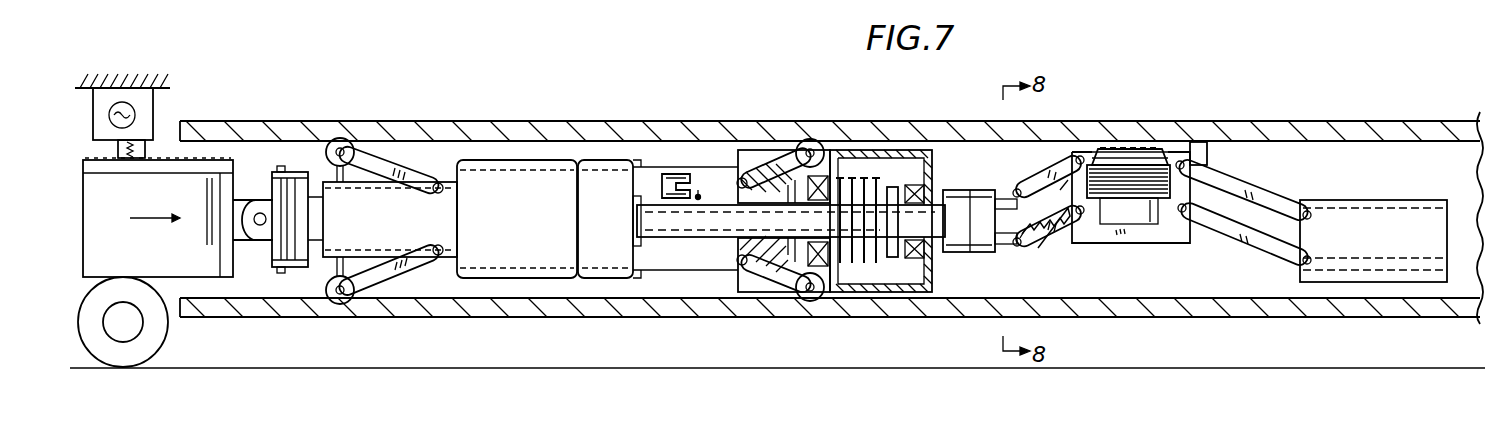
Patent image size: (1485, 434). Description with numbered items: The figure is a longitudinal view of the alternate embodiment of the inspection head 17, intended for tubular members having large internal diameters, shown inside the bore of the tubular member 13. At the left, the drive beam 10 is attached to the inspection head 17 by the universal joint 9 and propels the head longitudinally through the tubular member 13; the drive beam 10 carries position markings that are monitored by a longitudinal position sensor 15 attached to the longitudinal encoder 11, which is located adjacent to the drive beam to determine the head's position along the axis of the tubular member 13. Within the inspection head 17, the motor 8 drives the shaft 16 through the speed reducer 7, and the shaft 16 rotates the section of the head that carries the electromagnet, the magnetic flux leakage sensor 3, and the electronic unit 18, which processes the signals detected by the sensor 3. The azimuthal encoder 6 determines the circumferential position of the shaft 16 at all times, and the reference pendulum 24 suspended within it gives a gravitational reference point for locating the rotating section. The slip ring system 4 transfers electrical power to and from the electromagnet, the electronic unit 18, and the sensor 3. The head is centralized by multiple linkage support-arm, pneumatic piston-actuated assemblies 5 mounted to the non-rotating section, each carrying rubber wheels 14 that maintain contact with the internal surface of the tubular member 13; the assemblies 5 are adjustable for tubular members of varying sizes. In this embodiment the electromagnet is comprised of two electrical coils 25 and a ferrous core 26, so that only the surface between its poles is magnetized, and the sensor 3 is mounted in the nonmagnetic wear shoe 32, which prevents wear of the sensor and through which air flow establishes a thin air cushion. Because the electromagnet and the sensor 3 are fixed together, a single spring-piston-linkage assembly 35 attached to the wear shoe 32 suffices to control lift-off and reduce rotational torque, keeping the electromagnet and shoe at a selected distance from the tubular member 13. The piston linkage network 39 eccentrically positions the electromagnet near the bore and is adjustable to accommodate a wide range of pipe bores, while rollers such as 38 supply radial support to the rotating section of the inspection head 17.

The magnetic flux leakage sensor 3 is at (1106, 146).
The slip ring system 4 is at (891, 165).
The linkage support-arm, pneumatic piston-actuated assembly 5 is at (391, 165).
The azimuthal encoder 6 is at (678, 174).
The speed reducer 7 is at (606, 165).
The motor 8 is at (509, 180).
The universal joint 9 is at (273, 193).
The drive beam 10 is at (172, 256).
The longitudinal encoder 11 is at (150, 108).
The tubular member 13 is at (688, 125).
The rubber wheel 14 is at (338, 150).
The longitudinal position sensor 15 is at (140, 158).
The shaft 16 is at (703, 215).
The inspection head 17 is at (866, 300).
The electronic unit 18 is at (1358, 204).
The reference pendulum 24 is at (700, 195).
The electrical coil 25 is at (1134, 190).
The ferrous core 26 is at (1140, 160).
The nonmagnetic wear shoe 32 is at (1122, 148).
The spring-piston-linkage assembly 35 is at (1058, 205).
The roller 38 is at (1198, 150).
The piston linkage network 39 is at (1045, 178).